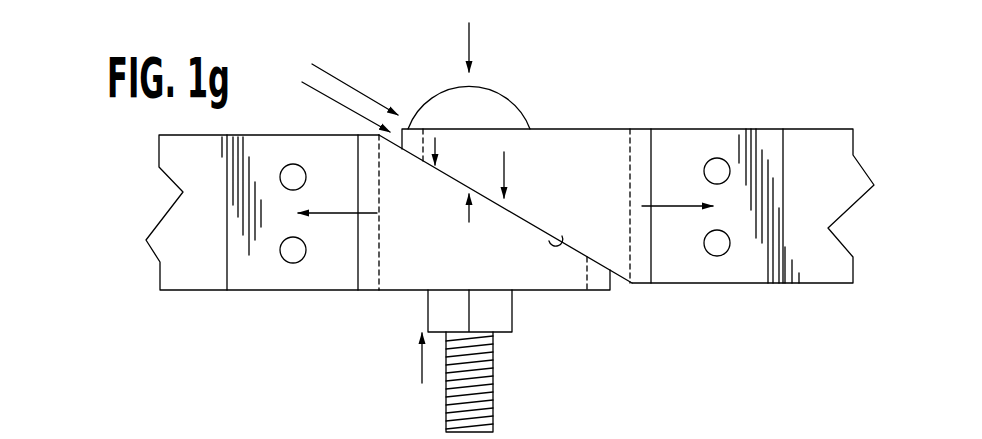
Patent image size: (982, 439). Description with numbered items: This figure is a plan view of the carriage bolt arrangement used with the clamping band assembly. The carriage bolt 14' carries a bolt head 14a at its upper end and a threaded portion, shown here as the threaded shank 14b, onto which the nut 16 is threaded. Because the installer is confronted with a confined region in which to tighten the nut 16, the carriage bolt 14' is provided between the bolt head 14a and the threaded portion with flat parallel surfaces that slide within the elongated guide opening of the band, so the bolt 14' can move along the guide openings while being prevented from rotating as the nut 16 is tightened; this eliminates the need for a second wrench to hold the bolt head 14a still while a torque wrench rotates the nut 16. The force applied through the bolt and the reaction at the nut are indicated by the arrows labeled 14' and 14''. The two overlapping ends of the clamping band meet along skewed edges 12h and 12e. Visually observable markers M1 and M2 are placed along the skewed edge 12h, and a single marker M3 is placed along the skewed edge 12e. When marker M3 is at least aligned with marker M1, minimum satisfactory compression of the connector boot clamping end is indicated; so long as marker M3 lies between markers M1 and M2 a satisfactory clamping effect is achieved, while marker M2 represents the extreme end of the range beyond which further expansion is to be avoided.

The carriage bolt 14' is at (531, 43).
The bolt head 14a is at (508, 97).
The skewed edge 12h is at (562, 236).
The skewed edge 12e is at (529, 221).
The nut 16 is at (512, 310).
The threaded bolt 14b is at (493, 387).
The reaction force on bolt 14'' is at (342, 386).
The visually observable marker M1 is at (518, 175).
The visually observable marker M2 is at (450, 150).
The visually observable marker M3 is at (454, 208).